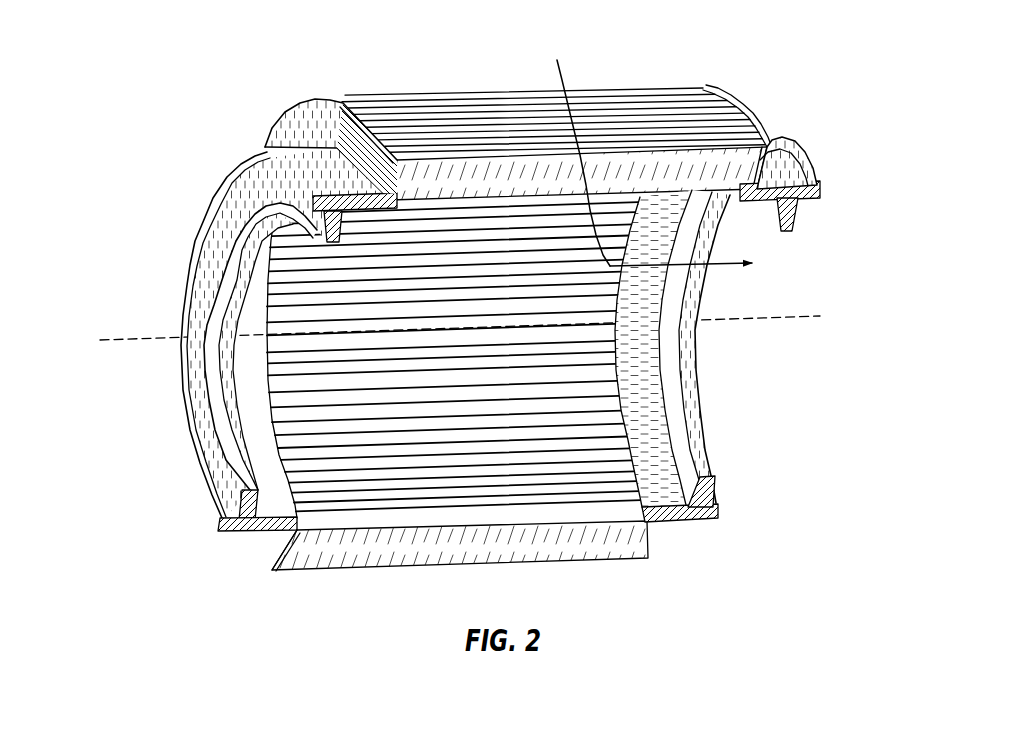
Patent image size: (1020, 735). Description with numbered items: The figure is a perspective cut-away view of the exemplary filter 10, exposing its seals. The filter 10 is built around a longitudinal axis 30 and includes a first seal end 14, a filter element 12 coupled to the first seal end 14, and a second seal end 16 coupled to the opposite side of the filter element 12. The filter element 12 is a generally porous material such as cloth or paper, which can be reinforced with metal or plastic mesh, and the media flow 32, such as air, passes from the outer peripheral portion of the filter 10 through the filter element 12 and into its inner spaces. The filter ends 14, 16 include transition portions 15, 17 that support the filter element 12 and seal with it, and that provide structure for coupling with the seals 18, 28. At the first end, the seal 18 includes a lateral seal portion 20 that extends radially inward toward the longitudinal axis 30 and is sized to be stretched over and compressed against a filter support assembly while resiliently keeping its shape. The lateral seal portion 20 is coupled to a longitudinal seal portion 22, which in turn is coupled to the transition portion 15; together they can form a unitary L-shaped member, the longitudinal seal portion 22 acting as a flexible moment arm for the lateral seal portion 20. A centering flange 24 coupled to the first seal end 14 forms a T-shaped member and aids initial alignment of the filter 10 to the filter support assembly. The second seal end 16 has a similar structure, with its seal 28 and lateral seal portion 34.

The filter 10 is at (496, 300).
The filter element 12 is at (644, 100).
The first seal end 14 is at (330, 112).
The transition portion 15 is at (295, 132).
The second seal end 16 is at (765, 317).
The transition portion 17 is at (790, 176).
The seal 18 is at (250, 535).
The lateral seal portion 20 is at (243, 503).
The longitudinal seal portion 22 is at (271, 570).
The centering flange 24 is at (182, 401).
The seal 28 is at (687, 518).
The longitudinal axis 30 is at (131, 338).
The media flow 32 is at (720, 263).
The lateral seal portion 34 is at (709, 493).